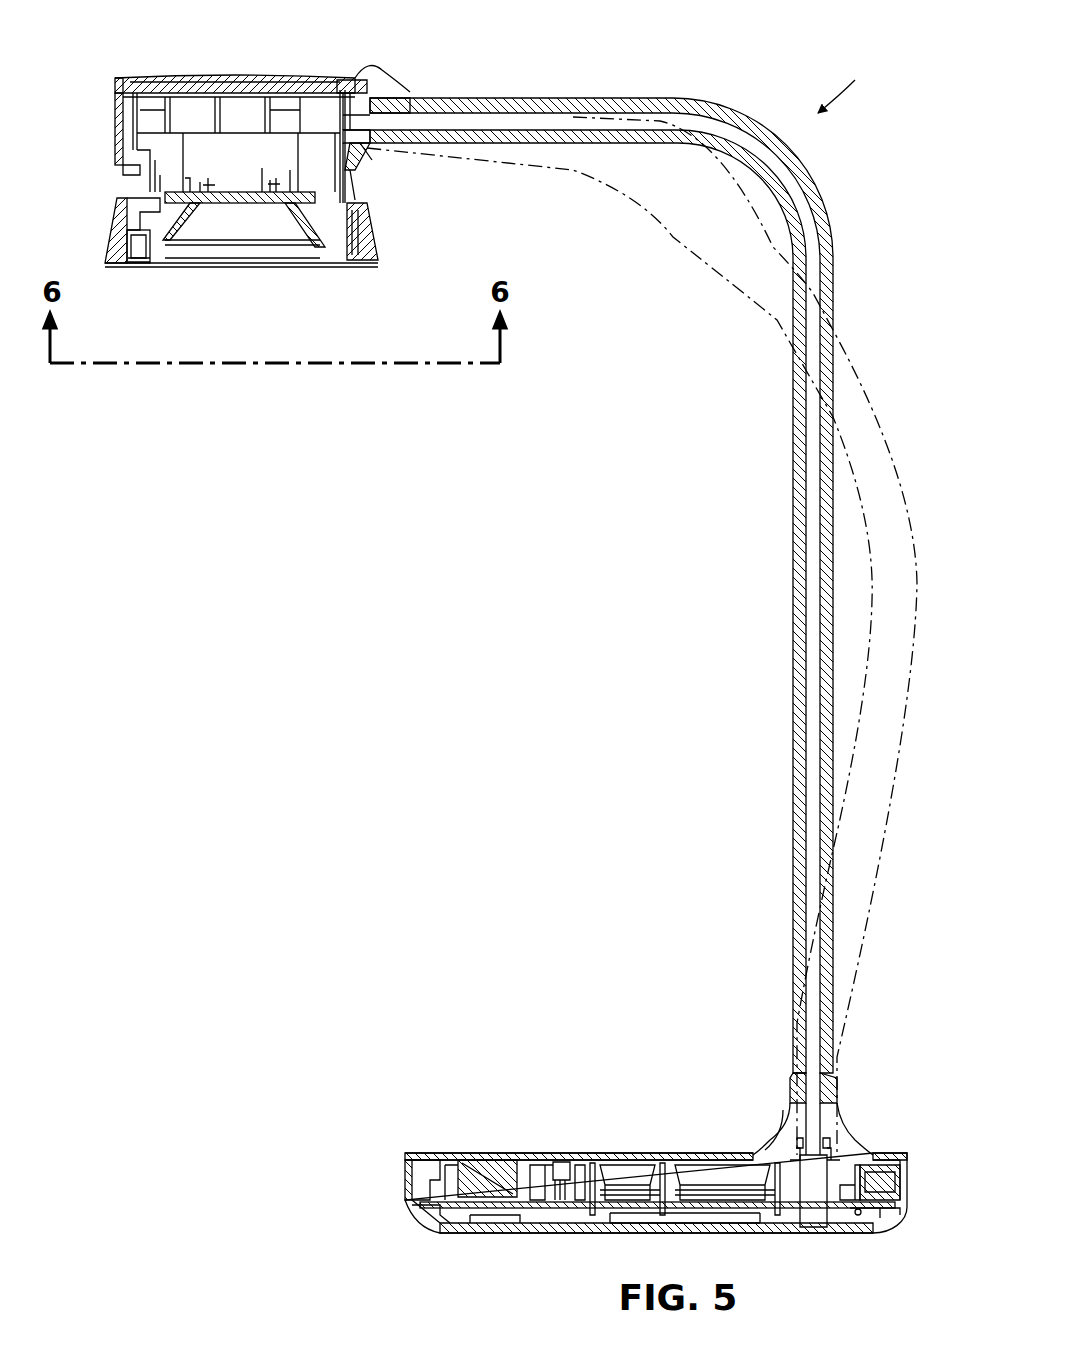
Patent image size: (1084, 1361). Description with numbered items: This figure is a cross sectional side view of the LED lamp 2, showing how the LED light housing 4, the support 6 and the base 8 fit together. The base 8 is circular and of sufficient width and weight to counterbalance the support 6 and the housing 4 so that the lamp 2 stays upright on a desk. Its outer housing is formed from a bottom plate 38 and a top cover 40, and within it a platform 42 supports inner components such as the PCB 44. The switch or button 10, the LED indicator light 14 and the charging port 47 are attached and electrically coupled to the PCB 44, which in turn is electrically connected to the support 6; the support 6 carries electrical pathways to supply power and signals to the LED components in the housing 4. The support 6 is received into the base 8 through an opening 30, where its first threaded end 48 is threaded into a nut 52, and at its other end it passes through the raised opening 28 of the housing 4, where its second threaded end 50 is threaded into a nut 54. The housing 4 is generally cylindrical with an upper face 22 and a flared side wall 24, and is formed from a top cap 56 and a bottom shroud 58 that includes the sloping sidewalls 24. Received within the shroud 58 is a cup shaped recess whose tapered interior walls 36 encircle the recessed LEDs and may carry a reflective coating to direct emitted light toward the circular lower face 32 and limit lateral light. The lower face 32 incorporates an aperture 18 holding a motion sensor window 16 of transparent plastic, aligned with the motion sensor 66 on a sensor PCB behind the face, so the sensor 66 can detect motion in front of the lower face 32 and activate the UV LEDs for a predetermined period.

The LED lamp 2 is at (845, 85).
The LED light housing 4 is at (118, 115).
The support 6 is at (833, 250).
The base 8 is at (405, 1172).
The switch or button 10 is at (485, 1157).
The LED indicator light 14 is at (560, 1160).
The motion sensor window 16 is at (145, 265).
The aperture 18 is at (128, 265).
The upper face 22 is at (335, 78).
The flared side wall 24 is at (375, 235).
The raised opening 28 is at (385, 95).
The opening 30 is at (782, 1118).
The circular lower face 32 is at (372, 265).
The tapered interior walls 36 is at (190, 215).
The bottom plate 38 is at (440, 1226).
The top cover 40 is at (405, 1155).
The platform 42 is at (905, 1200).
The PCB 44 is at (575, 1208).
The charging port 47 is at (900, 1178).
The first threaded end 48 is at (830, 1140).
The second threaded end 50 is at (375, 150).
The nut 52 is at (835, 1152).
The nut 54 is at (365, 85).
The top cap 56 is at (118, 80).
The bottom shroud 58 is at (117, 200).
The motion sensor 66 is at (135, 243).